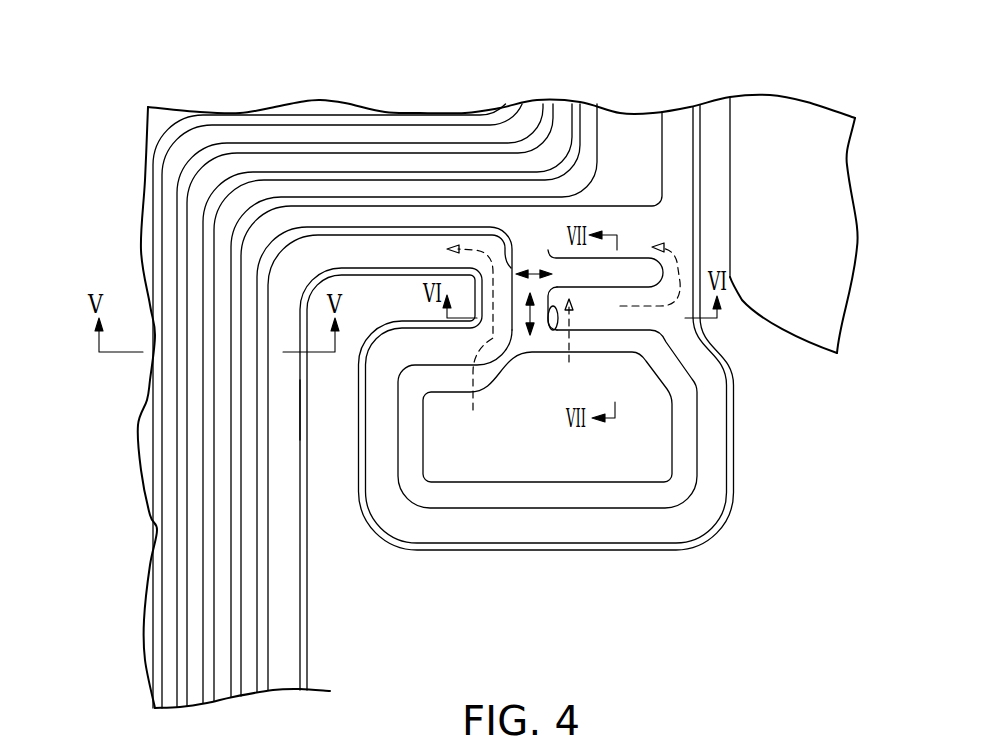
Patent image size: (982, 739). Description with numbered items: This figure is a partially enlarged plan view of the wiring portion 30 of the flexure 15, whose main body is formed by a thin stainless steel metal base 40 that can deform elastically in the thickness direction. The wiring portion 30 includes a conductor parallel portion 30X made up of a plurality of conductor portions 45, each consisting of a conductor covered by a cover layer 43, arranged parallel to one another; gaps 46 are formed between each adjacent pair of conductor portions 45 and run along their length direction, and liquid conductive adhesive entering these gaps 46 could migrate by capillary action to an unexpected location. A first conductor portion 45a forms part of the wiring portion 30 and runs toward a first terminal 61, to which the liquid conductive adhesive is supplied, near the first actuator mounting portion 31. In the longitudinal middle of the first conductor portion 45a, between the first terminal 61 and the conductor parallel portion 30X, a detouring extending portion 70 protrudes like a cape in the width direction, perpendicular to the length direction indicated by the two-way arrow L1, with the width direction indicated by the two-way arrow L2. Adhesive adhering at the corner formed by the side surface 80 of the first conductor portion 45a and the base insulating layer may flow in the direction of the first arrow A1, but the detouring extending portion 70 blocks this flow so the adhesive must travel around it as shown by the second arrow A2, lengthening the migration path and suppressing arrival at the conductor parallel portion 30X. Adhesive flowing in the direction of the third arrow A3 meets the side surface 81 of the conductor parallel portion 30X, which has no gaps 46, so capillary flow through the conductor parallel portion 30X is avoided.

The flexure 15 is at (566, 84).
The wiring portion 30 is at (350, 112).
The conductor parallel portion 30X is at (205, 368).
The first actuator mounting portion 31 is at (792, 507).
The metal base 40 is at (308, 497).
The cover layer 43 is at (440, 497).
The conductor portion 45 is at (238, 270).
The first conductor portion 45a is at (548, 250).
The gaps 46 is at (248, 527).
The first terminal 61 is at (585, 470).
The detouring extending portion 70 is at (626, 258).
The side surface of the first conductor portion 80 is at (553, 331).
The side surface of the conductor parallel portion 81 is at (283, 373).
The first arrow A1 is at (576, 348).
The second arrow A2 is at (670, 252).
The third arrow A3 is at (470, 343).
The two-way arrow indicating the length direction L1 is at (530, 343).
The two-way arrow indicating the width direction L2 is at (532, 270).